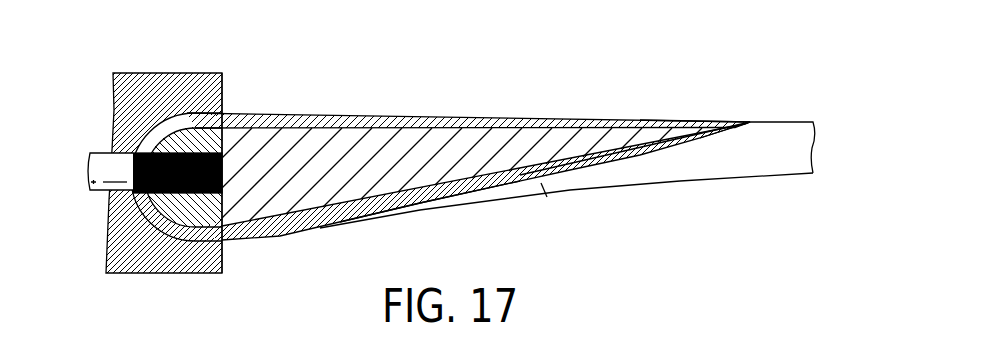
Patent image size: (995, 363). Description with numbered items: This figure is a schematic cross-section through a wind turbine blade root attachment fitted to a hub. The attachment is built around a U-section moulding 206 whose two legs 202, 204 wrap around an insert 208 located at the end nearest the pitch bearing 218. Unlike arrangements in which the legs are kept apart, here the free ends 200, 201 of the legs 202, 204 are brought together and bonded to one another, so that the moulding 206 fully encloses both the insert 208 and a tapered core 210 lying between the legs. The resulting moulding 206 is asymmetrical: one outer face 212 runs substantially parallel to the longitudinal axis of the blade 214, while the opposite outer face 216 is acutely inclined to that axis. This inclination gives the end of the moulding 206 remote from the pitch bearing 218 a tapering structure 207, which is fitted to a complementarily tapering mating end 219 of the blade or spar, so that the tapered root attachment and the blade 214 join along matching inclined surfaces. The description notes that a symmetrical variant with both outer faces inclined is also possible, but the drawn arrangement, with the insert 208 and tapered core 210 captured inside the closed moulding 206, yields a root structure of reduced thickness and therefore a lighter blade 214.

The free end 200 is at (696, 121).
The free end 201 is at (693, 138).
The leg 202 is at (444, 118).
The leg 204 is at (613, 158).
The U-section moulding 206 is at (374, 217).
The tapering structure 207 is at (604, 145).
The insert 208 is at (197, 241).
The tapered core 210 is at (289, 201).
The outer face 212 is at (280, 113).
The blade 214 is at (766, 176).
The outer face 216 is at (466, 195).
The pitch bearing 218 is at (147, 80).
The tapering mating end 219 is at (545, 195).